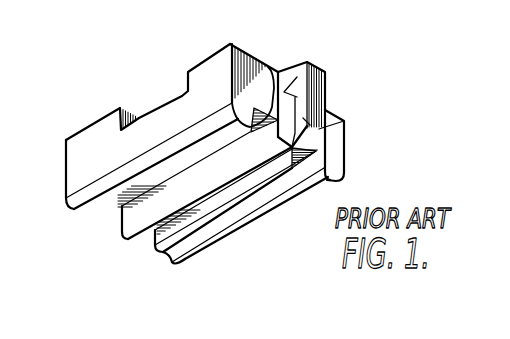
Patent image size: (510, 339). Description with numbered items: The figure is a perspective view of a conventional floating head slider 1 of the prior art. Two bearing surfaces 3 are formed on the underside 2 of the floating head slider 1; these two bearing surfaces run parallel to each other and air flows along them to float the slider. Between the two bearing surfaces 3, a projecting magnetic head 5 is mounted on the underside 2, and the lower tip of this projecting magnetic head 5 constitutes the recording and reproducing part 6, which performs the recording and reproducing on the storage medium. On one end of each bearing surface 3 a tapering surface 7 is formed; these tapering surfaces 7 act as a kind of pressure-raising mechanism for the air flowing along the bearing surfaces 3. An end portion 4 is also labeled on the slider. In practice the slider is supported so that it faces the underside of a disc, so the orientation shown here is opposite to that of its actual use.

The floating head slider 1 is at (102, 120).
The underside 2 is at (262, 108).
The bearing surface 3 is at (119, 205).
The end projection 4 is at (344, 121).
The projecting magnetic head 5 is at (317, 72).
The recording-/reproducing part 6 is at (323, 143).
The tapering surface 7 is at (76, 212).